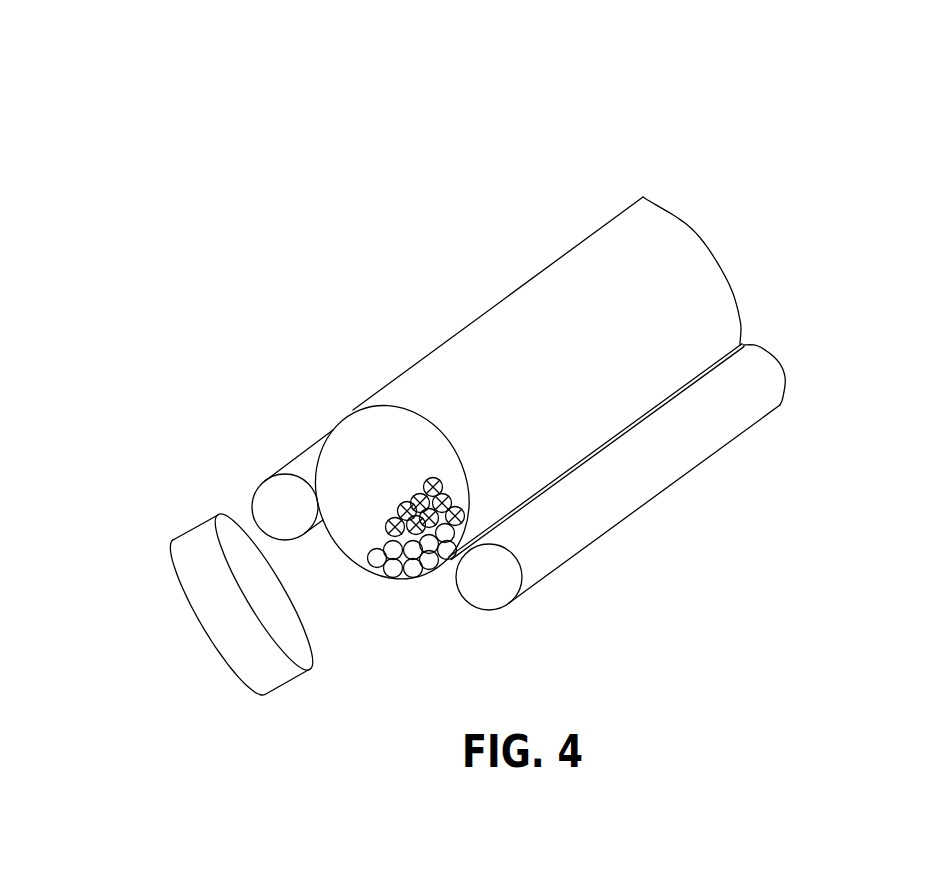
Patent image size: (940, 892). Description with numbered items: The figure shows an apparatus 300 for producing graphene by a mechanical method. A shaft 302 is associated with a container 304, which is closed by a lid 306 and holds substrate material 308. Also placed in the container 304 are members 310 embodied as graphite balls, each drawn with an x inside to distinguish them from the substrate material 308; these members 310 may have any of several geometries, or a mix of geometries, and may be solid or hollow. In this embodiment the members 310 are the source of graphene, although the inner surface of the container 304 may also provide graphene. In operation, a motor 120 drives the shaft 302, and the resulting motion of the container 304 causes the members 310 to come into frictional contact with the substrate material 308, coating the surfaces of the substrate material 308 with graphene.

The apparatus 300 is at (350, 125).
The shaft 302 is at (653, 498).
The container 304 is at (353, 408).
The lid 306 is at (219, 516).
The substrate material 308 is at (413, 578).
The members 310 is at (464, 508).
The motor 120 is at (806, 345).